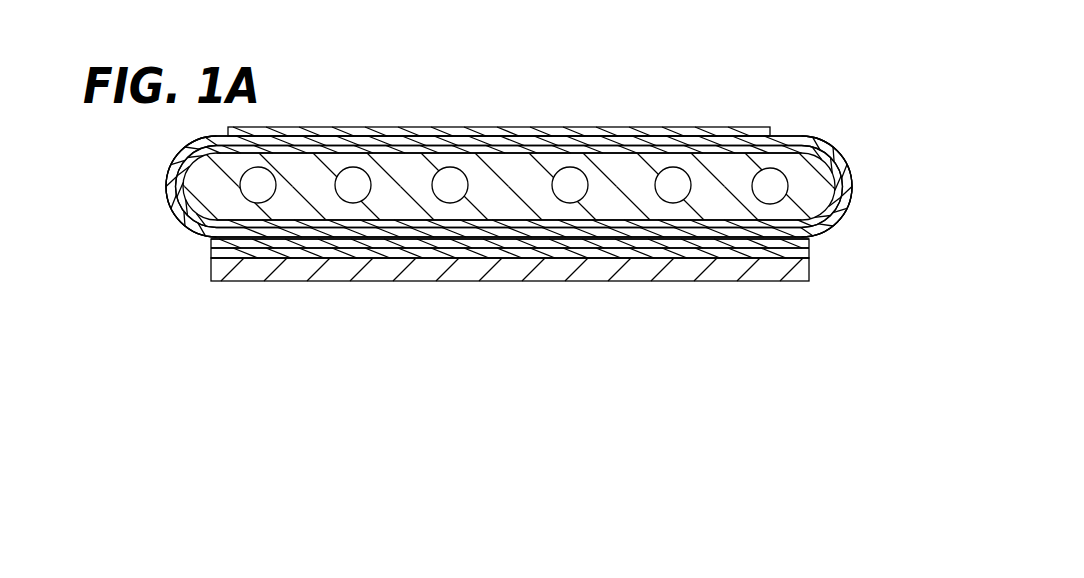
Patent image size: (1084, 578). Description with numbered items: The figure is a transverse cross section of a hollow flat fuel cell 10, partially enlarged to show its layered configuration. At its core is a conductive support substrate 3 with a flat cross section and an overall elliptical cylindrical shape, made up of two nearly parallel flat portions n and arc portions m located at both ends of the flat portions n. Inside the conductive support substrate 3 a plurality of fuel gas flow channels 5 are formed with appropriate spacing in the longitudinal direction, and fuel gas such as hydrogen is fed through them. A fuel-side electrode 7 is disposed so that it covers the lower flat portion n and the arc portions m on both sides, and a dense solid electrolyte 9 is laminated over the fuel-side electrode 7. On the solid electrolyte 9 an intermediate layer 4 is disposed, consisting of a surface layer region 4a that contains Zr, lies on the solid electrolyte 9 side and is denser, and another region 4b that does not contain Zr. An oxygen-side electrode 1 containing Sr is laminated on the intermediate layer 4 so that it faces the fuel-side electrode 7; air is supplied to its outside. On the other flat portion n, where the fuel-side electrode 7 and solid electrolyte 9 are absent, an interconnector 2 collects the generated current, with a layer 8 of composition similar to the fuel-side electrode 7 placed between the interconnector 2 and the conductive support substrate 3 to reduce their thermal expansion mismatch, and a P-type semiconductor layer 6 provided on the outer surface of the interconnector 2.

The oxygen-side electrode 1 is at (235, 270).
The interconnector 2 is at (292, 138).
The conductive support substrate 3 is at (815, 207).
The intermediate layer 4 is at (373, 343).
The surface layer region 4a is at (363, 243).
The other region 4b is at (280, 253).
The fuel gas flow channels 5 is at (447, 178).
The P-type semiconductor layer 6 is at (463, 133).
The fuel-side electrode 7 is at (688, 227).
The layer having a composition similar to the fuel-side electrode 8 is at (666, 148).
The solid electrolyte 9 is at (605, 237).
The fuel cell 10 is at (808, 100).
The arc portions m is at (185, 185).
The flat portions n is at (602, 153).